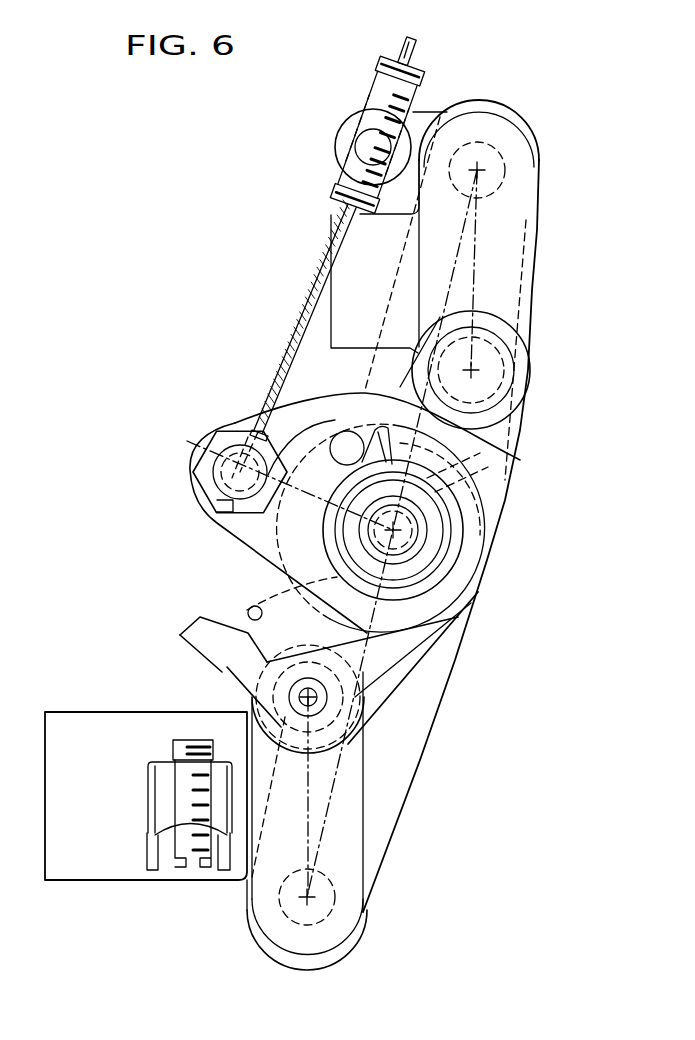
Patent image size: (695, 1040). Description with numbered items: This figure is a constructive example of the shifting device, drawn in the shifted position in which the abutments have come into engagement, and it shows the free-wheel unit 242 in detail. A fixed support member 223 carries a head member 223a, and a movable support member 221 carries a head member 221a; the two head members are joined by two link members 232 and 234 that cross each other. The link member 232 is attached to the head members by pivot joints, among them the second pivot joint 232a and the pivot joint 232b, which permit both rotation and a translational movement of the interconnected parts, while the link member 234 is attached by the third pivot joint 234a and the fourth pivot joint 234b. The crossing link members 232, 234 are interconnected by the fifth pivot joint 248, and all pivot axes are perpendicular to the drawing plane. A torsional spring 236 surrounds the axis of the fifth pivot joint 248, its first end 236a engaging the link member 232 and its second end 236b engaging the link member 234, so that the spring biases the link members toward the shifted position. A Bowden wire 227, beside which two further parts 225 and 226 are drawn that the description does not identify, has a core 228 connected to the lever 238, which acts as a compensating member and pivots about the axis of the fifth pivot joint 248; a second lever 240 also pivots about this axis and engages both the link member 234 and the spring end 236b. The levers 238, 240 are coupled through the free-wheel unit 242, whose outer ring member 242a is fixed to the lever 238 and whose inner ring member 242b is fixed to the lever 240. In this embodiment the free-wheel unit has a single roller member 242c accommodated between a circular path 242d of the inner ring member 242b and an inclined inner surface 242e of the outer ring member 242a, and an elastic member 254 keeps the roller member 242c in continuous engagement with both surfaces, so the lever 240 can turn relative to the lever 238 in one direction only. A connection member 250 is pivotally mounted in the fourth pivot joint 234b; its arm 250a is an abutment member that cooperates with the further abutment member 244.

The movable support member 221 is at (112, 868).
The head member 221a is at (350, 837).
The fixed support member 223 is at (353, 290).
The head member 223a is at (502, 263).
The adjusting knob 225 is at (343, 138).
The threaded adjusting sleeve 226 is at (377, 74).
The Bowden wire 227 is at (427, 82).
The core of the Bowden wire 228 is at (290, 340).
The link member 232 is at (493, 108).
The second pivot joint 232a is at (505, 165).
The pivot joint 232b is at (315, 903).
The link member 234 is at (397, 652).
The third pivot joint 234a is at (504, 365).
The fourth pivot joint 234b is at (308, 697).
The torsional spring 236 is at (462, 618).
The first end of the torsional spring 236a is at (470, 485).
The second end of the torsional spring 236b is at (247, 608).
The lever 238 is at (320, 413).
The lever 240 is at (220, 630).
The free-wheel unit 242 is at (500, 437).
The outer ring member 242a is at (463, 582).
The inner ring member 242b is at (452, 527).
The roller member 242c is at (275, 418).
The circular path 242d is at (400, 463).
The inclined inner surface 242e is at (250, 515).
The abutment member 244 is at (175, 750).
The fifth pivot joint 248 is at (452, 555).
The connection member 250 is at (343, 670).
The arm 250a is at (207, 662).
The elastic member 254 is at (393, 437).